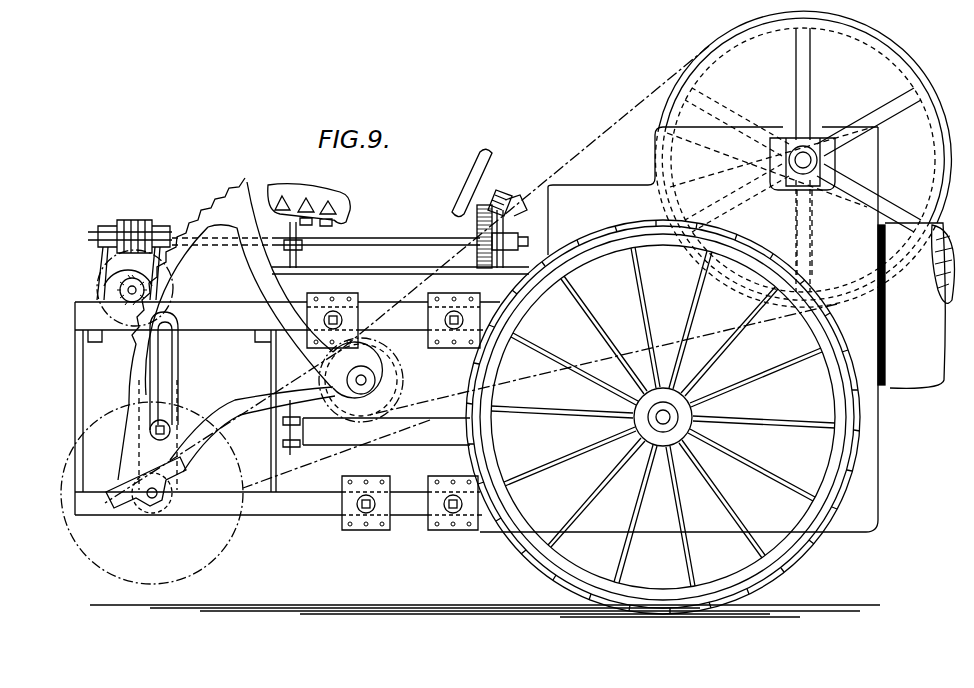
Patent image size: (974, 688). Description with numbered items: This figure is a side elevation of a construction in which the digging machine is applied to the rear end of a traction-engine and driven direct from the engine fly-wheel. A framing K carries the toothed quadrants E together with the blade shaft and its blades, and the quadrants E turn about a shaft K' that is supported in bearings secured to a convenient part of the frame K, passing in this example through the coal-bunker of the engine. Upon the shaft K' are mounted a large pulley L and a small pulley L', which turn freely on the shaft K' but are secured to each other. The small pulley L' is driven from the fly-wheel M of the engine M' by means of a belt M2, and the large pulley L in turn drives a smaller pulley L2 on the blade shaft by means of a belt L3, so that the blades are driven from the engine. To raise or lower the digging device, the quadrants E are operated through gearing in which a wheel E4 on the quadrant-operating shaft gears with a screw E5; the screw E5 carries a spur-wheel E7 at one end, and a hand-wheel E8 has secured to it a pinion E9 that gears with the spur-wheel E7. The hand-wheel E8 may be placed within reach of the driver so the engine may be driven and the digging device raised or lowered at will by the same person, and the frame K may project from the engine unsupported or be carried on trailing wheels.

The toothed quadrant E is at (252, 262).
The wheel E4 is at (110, 270).
The screw E5 is at (143, 238).
The spur-wheel E7 is at (472, 222).
The hand-wheel E8 is at (488, 160).
The pinion E9 is at (497, 190).
The framing K is at (515, 342).
The shaft K' is at (376, 434).
The large pulley L is at (378, 364).
The small pulley L' is at (383, 380).
The smaller pulley L2 is at (146, 520).
The belt L3 is at (210, 494).
The fly-wheel M is at (803, 159).
The engine M' is at (387, 380).
The belt M2 is at (630, 125).